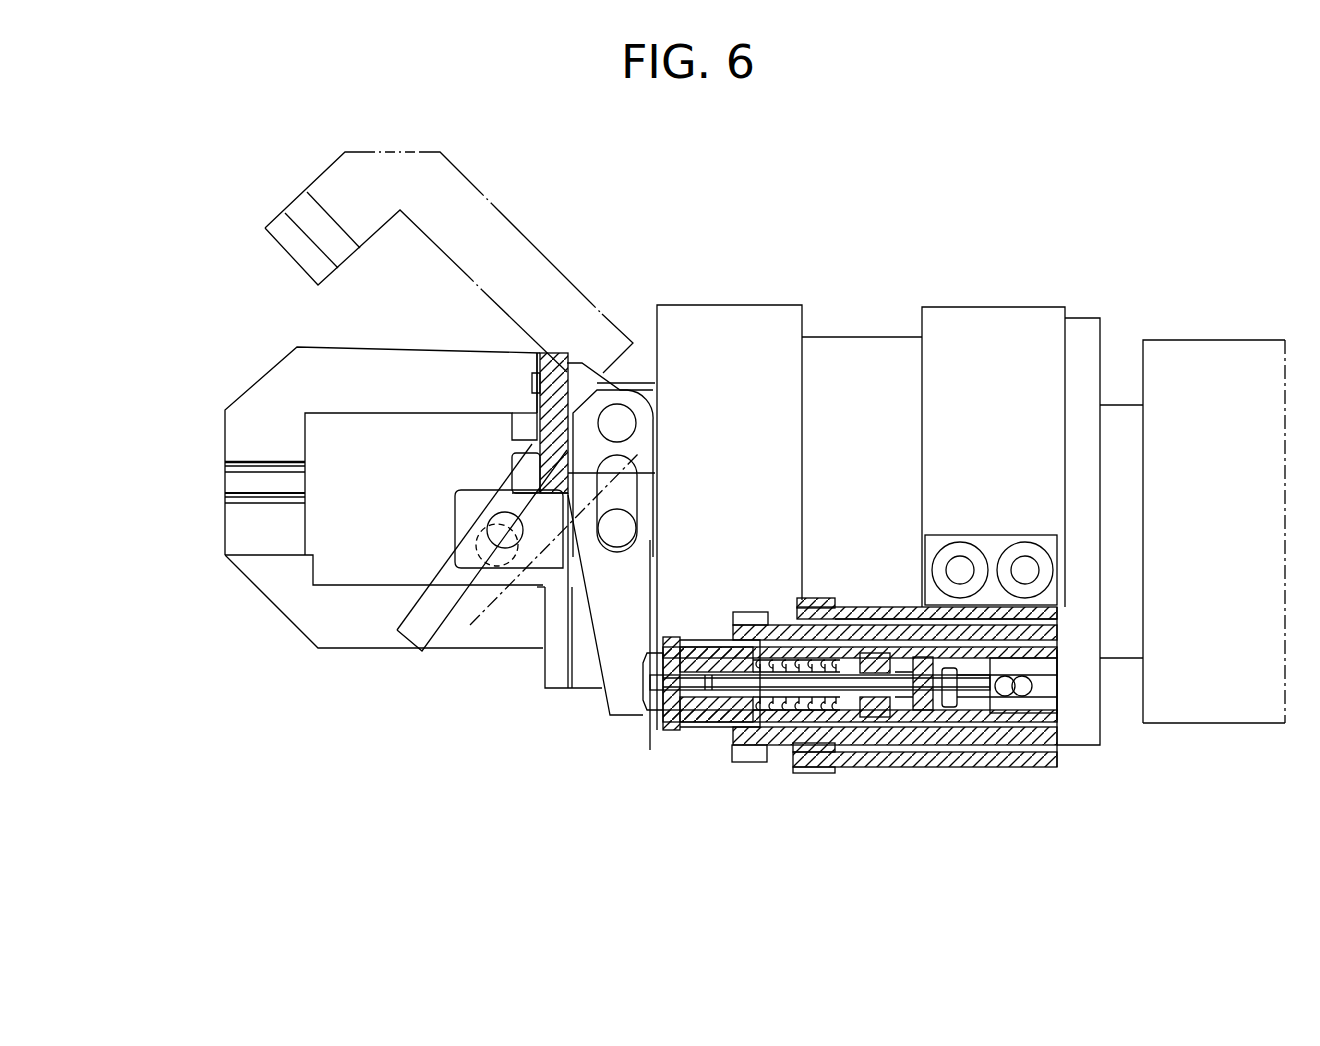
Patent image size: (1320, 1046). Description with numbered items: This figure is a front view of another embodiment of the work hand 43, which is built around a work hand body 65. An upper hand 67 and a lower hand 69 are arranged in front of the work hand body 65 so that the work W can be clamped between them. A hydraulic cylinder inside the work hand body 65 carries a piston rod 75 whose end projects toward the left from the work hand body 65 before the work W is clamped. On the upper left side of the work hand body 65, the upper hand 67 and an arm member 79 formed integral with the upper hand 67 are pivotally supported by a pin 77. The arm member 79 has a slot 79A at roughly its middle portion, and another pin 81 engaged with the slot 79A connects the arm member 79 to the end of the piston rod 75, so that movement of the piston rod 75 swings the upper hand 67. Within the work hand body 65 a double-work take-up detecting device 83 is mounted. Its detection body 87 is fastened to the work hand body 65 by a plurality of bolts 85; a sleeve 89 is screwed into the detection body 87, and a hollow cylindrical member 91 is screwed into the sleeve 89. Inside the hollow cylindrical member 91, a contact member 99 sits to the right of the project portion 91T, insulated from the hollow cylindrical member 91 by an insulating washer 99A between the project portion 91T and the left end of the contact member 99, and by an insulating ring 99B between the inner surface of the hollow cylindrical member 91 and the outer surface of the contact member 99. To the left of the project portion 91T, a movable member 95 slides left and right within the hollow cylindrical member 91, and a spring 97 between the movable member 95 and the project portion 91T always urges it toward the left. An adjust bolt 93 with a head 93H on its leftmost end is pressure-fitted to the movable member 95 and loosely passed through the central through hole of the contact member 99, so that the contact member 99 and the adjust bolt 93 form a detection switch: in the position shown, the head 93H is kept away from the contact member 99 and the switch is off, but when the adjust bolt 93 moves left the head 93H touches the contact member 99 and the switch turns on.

The work hand 43 is at (835, 226).
The work hand body 65 is at (862, 338).
The upper hand 67 is at (560, 264).
The lower hand 69 is at (355, 650).
The piston rod 75 is at (456, 508).
The pin 77 is at (640, 424).
The arm member 79 is at (472, 612).
The slot 79A is at (640, 502).
The pin 81 is at (470, 540).
The double-work take-up detecting device 83 is at (918, 803).
The bolts 85 is at (1025, 548).
The detection body 87 is at (1058, 760).
The sleeve 89 is at (750, 760).
The hollow cylindrical member 91 is at (822, 608).
The project portion 91T is at (822, 768).
The adjust bolt 93 is at (712, 760).
The head 93H is at (957, 700).
The movable member 95 is at (683, 640).
The spring 97 is at (795, 648).
The contact member 99 is at (960, 710).
The insulating washer 99A is at (898, 658).
The insulating ring 99B is at (918, 665).
The work W is at (235, 486).